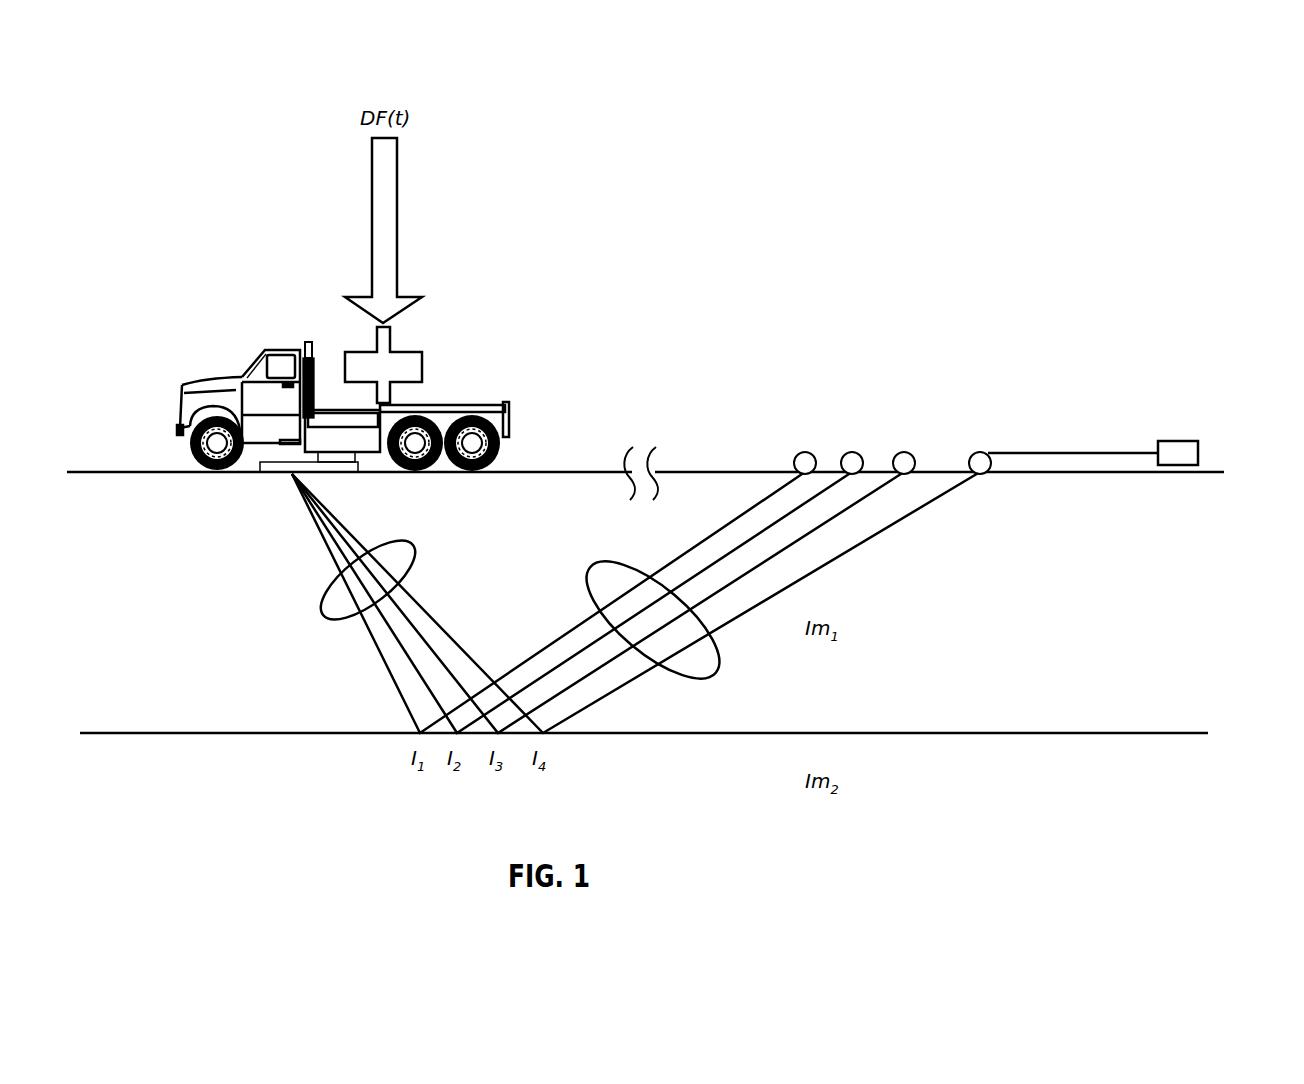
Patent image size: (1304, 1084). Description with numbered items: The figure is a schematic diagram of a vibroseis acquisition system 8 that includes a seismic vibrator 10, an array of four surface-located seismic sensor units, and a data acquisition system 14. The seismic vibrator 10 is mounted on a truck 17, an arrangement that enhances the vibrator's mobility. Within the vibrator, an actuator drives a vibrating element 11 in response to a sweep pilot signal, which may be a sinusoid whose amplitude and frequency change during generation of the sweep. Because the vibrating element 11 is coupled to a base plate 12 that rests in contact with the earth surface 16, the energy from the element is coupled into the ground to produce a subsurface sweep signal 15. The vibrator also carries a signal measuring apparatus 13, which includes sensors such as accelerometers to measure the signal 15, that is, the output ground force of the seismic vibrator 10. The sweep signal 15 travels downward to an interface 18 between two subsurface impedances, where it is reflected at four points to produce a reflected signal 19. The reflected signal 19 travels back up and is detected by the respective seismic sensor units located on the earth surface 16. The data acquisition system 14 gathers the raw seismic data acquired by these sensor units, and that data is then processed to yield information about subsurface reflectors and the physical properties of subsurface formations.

The vibroseis acquisition system 8 is at (935, 375).
The seismic vibrator 10 is at (156, 333).
The vibrating element 11 is at (420, 340).
The base plate 12 is at (277, 465).
The signal measuring apparatus 13 is at (330, 455).
The data acquisition system 14 is at (1178, 441).
The subsurface sweep signal 15 is at (327, 612).
The earth surface 16 is at (130, 472).
The truck 17 is at (287, 350).
The interface 18 is at (1057, 733).
The reflected signal 19 is at (717, 668).